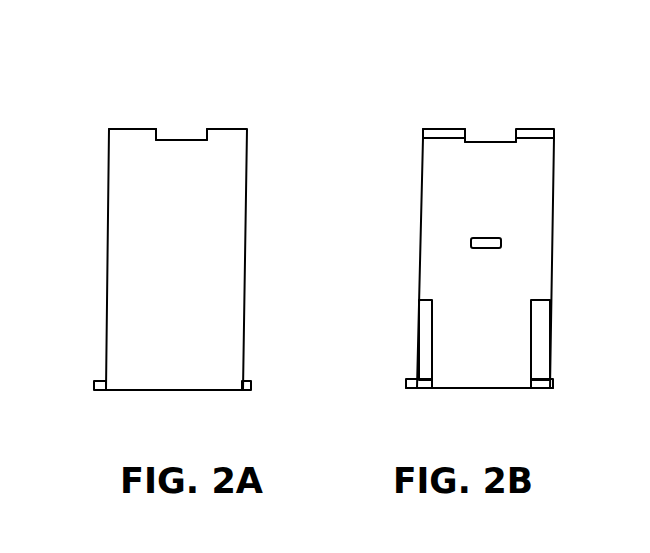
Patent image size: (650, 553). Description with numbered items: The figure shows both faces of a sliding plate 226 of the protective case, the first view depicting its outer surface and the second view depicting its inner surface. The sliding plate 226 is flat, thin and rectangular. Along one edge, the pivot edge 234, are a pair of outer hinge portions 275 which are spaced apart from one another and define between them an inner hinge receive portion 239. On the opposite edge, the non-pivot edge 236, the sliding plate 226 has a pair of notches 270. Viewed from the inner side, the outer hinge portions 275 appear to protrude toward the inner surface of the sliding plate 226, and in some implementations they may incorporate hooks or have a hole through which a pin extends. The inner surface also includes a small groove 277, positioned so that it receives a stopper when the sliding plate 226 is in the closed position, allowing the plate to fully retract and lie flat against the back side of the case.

In FIG. 2A, the sliding plate 226 is at (220, 269).
In FIG. 2B, the sliding plate 226 is at (543, 272).
In FIG. 2A, the pivot edge 234 is at (127, 129).
In FIG. 2B, the pivot edge 234 is at (437, 129).
In FIG. 2A, the non-pivot edge 236 is at (175, 380).
In FIG. 2B, the non-pivot edge 236 is at (488, 383).
In FIG. 2A, the inner hinge receive portion 239 is at (183, 138).
In FIG. 2B, the inner hinge receive portion 239 is at (492, 142).
In FIG. 2A, the notches 270 is at (93, 382).
In FIG. 2B, the notches 270 is at (405, 389).
In FIG. 2A, the outer hinge portions 275 is at (141, 130).
In FIG. 2B, the outer hinge portions 275 is at (457, 132).
In FIG. 2B, the small groove 277 is at (488, 240).